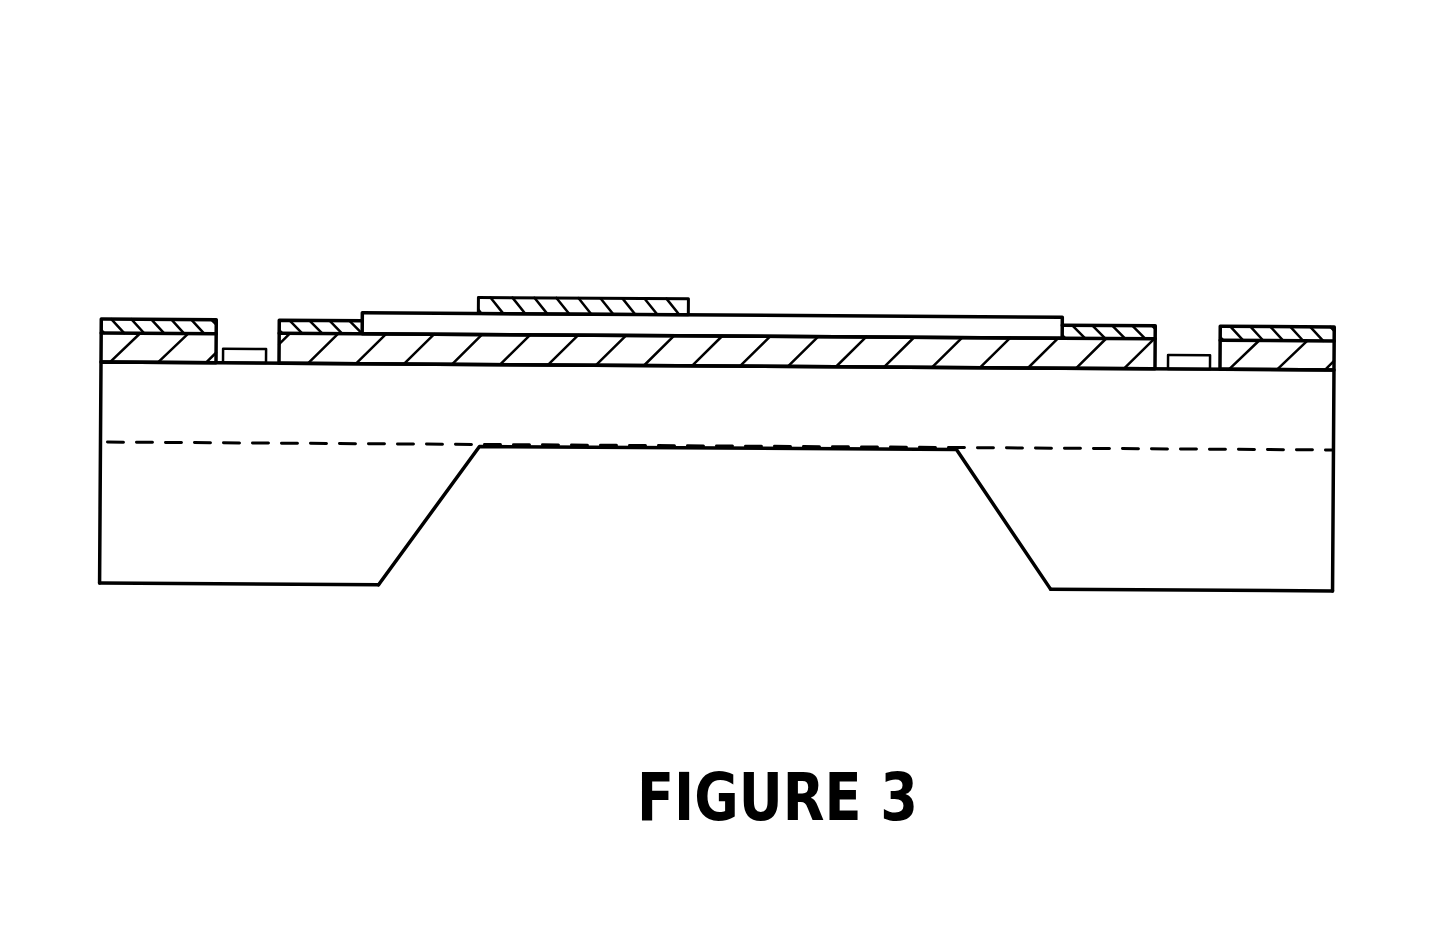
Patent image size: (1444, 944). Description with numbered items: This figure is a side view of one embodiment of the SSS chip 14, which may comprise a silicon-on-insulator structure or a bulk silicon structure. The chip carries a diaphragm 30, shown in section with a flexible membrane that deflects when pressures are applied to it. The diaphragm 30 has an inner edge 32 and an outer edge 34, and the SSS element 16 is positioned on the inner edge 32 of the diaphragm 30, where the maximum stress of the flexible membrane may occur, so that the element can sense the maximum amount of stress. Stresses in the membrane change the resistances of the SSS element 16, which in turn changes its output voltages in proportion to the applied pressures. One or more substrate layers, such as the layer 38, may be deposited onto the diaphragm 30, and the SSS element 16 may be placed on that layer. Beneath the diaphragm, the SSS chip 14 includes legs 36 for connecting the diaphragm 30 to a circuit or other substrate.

The SSS chip 14 is at (493, 66).
The SSS element 16 is at (579, 292).
The diaphragm 30 is at (1336, 420).
The inner edge 32 is at (543, 472).
The outer edge 34 is at (1300, 606).
The legs 36 is at (1336, 543).
The layer 38 is at (1336, 362).